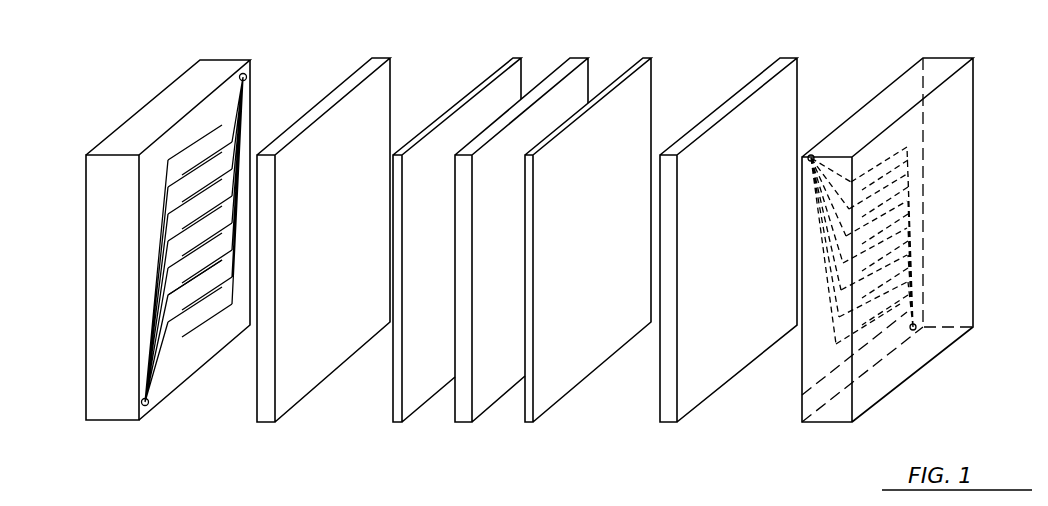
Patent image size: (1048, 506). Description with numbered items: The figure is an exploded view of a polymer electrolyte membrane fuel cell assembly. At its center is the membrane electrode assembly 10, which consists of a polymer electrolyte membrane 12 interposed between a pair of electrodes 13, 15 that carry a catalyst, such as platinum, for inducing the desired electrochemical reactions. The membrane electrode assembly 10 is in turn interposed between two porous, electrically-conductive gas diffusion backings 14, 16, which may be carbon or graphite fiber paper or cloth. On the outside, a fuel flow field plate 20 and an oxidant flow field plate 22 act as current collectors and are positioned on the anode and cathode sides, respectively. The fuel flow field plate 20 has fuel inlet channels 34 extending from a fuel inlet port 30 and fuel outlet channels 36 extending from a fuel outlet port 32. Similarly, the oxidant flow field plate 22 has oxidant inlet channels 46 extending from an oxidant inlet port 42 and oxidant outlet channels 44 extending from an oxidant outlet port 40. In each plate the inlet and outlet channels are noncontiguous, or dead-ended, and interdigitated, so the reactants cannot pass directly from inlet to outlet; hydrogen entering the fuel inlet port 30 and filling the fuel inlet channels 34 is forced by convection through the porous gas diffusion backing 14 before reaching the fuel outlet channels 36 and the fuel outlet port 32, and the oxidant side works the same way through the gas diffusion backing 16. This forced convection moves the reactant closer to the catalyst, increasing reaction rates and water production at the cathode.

The membrane electrode assembly 10 is at (535, 250).
The polymer electrolyte membrane 12 is at (573, 58).
The electrode 13 is at (515, 58).
The gas diffusion backing 14 is at (385, 58).
The electrode 15 is at (647, 58).
The gas diffusion backing 16 is at (787, 58).
The fuel flow field plate 20 is at (227, 65).
The oxidant flow field plate 22 is at (953, 67).
The fuel inlet port 30 is at (147, 405).
The fuel outlet port 32 is at (247, 77).
The fuel inlet channels 34 is at (188, 140).
The fuel outlet channels 36 is at (213, 296).
The oxidant outlet port 40 is at (810, 155).
The oxidant inlet port 42 is at (915, 330).
The oxidant outlet channels 44 is at (802, 397).
The oxidant inlet channels 46 is at (881, 142).